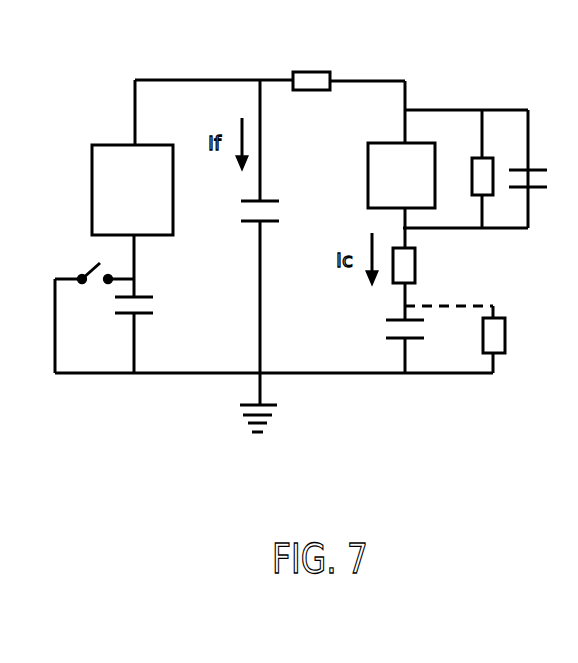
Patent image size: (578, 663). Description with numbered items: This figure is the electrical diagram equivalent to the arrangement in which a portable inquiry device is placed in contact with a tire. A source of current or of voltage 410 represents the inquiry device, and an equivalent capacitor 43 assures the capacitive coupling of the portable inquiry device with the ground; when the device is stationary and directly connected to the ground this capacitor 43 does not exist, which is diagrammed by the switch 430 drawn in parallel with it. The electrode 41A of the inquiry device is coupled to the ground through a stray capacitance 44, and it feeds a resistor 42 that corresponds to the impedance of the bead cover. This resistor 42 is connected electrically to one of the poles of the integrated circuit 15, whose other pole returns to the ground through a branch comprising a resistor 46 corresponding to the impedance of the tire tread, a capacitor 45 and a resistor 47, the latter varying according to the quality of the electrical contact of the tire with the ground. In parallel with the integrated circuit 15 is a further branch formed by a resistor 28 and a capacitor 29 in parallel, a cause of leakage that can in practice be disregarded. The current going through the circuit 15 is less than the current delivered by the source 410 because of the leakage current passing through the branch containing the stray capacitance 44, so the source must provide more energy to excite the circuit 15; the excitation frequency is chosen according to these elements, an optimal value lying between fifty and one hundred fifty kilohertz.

The electrode 41A is at (214, 64).
The source of current or of voltage 410 is at (97, 133).
The switch 430 is at (70, 266).
The equivalent capacitor 43 is at (166, 296).
The stray capacitance 44 is at (295, 204).
The resistor 42 is at (324, 57).
The integrated circuit 15 is at (377, 128).
The resistor 28 is at (459, 167).
The capacitor 29 is at (558, 166).
The resistor 46 is at (434, 265).
The capacitor 45 is at (371, 335).
The resistor 47 is at (518, 341).